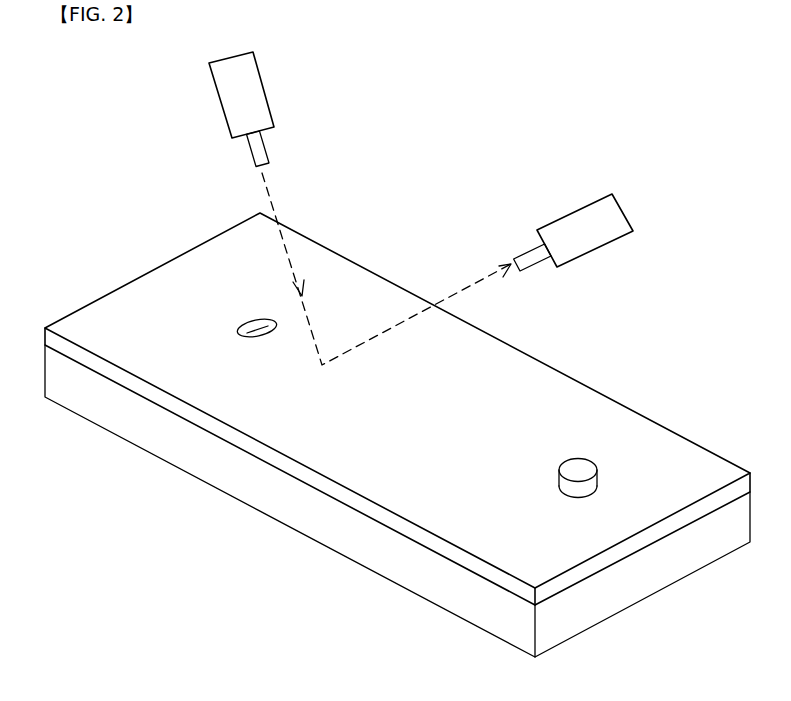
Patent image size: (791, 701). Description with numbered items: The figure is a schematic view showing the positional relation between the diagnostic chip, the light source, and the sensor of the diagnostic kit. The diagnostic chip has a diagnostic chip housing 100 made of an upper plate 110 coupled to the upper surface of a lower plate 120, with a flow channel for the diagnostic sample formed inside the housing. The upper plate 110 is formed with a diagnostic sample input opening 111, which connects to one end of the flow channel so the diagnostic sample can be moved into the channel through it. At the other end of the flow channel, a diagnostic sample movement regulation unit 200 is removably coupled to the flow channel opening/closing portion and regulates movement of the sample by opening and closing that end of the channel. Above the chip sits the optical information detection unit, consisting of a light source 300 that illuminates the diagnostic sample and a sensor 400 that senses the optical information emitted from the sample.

The diagnostic chip housing 100 is at (397, 435).
The upper plate 110 is at (172, 399).
The diagnostic sample input opening 111 is at (256, 329).
The lower plate 120 is at (195, 458).
The diagnostic sample movement regulation unit 200 is at (586, 472).
The light source 300 is at (257, 95).
The sensor 400 is at (583, 222).